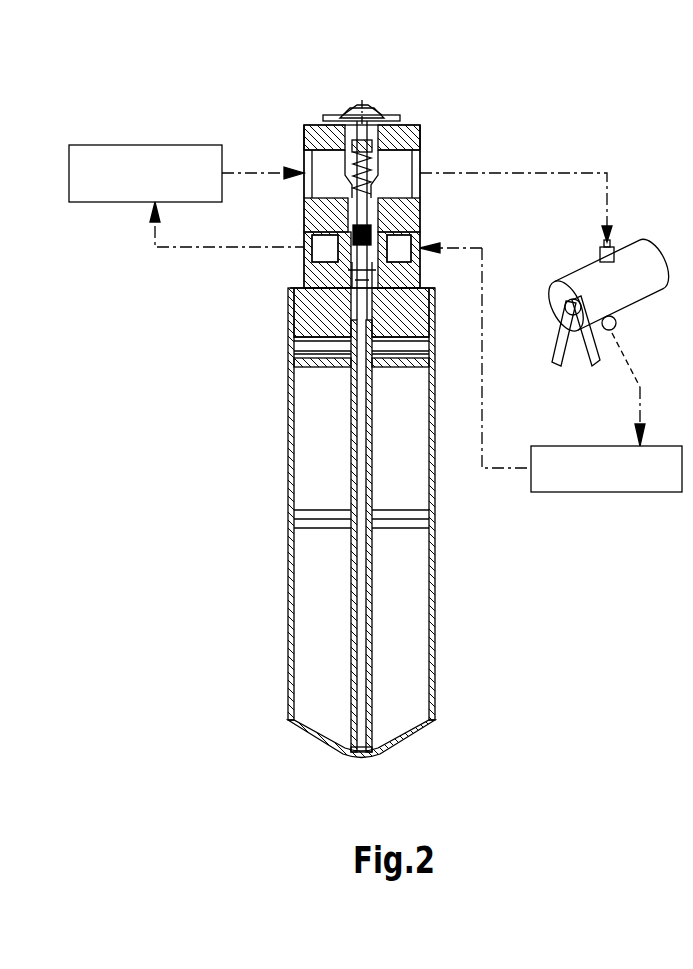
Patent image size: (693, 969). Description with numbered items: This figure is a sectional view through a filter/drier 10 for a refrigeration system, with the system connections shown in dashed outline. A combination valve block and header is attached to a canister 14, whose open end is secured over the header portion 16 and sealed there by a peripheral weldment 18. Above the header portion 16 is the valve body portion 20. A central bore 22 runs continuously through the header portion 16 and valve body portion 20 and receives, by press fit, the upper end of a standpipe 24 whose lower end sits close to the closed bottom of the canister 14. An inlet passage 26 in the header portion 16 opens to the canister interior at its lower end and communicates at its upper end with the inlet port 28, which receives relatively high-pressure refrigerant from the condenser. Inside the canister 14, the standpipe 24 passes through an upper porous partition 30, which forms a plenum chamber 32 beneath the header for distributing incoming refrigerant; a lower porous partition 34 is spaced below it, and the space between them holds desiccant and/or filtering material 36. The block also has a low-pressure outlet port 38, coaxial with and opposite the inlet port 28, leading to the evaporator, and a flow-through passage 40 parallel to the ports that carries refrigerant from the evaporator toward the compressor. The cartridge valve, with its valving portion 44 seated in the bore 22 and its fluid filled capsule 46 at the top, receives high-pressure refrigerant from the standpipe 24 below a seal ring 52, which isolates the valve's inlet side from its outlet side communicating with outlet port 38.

The filter/drier 10 is at (494, 564).
The canister 14 is at (290, 575).
The header portion 16 is at (290, 297).
The peripheral weldment 18 is at (290, 310).
The valve body portion 20 is at (304, 160).
The central bore 22 is at (345, 290).
The standpipe 24 is at (350, 630).
The inlet passage 26 is at (475, 355).
The inlet port 28 is at (422, 232).
The porous partition 30 is at (307, 372).
The plenum chamber 32 is at (340, 343).
The lower porous partition 34 is at (320, 512).
The desiccant and/or filtering material 36 is at (305, 437).
The outlet port 38 is at (312, 250).
The flow-through passage 40 is at (420, 180).
The valving portion 44 is at (392, 275).
The fluid filled capsule 46 is at (340, 97).
The seal ring 52 is at (350, 272).